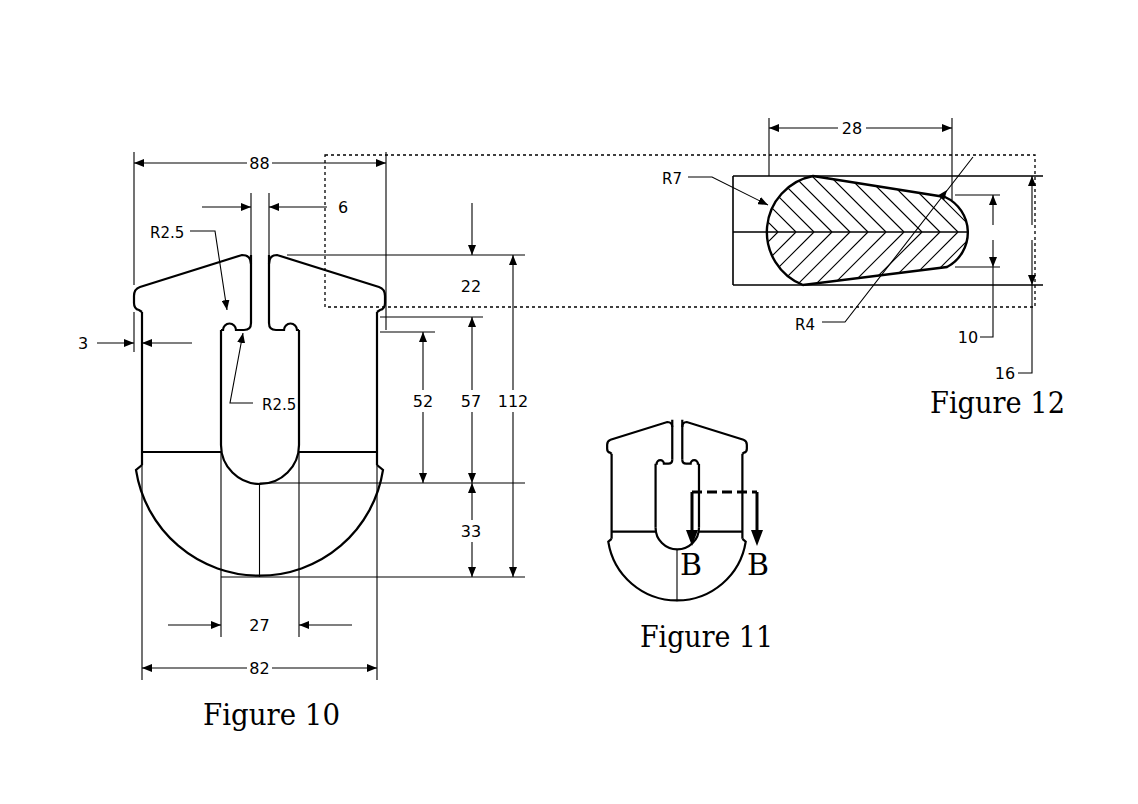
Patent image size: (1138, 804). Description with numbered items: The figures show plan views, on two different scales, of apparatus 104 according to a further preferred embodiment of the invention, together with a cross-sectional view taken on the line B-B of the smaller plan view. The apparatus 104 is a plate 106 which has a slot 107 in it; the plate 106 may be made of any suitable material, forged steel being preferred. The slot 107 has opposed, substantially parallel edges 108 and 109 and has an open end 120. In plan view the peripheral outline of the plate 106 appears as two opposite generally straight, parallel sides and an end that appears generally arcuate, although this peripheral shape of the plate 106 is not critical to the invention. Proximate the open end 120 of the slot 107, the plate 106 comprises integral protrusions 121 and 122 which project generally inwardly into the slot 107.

In FIG. 10, the apparatus 104 is at (100, 486).
In FIG. 11, the apparatus 104 is at (850, 555).
In FIG. 12, the apparatus 104 is at (978, 118).
In FIG. 10, the plate 106 is at (135, 393).
In FIG. 11, the plate 106 is at (757, 475).
In FIG. 12, the plate 106 is at (767, 258).
In FIG. 10, the slot 107 is at (267, 368).
In FIG. 11, the slot 107 is at (675, 478).
In FIG. 11, the edge 108 is at (697, 470).
In FIG. 11, the edge 109 is at (653, 495).
In FIG. 10, the open end 120 is at (272, 248).
In FIG. 11, the open end 120 is at (637, 398).
In FIG. 10, the protrusion 121 is at (272, 338).
In FIG. 11, the protrusion 121 is at (685, 460).
In FIG. 10, the protrusion 122 is at (238, 330).
In FIG. 11, the protrusion 122 is at (658, 460).